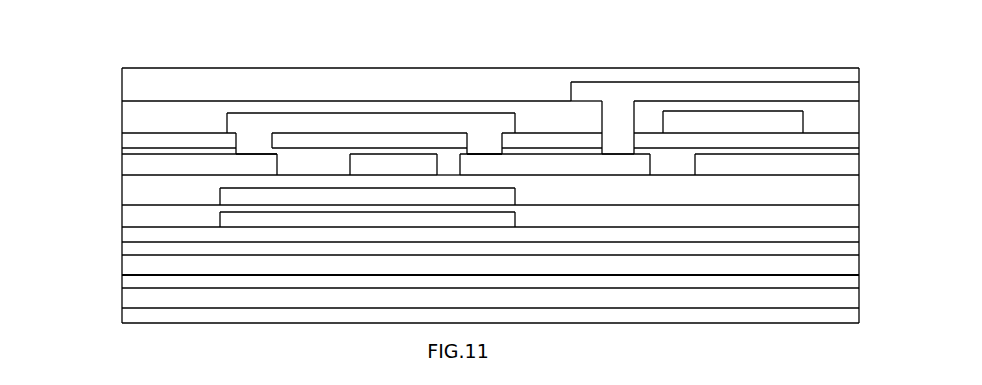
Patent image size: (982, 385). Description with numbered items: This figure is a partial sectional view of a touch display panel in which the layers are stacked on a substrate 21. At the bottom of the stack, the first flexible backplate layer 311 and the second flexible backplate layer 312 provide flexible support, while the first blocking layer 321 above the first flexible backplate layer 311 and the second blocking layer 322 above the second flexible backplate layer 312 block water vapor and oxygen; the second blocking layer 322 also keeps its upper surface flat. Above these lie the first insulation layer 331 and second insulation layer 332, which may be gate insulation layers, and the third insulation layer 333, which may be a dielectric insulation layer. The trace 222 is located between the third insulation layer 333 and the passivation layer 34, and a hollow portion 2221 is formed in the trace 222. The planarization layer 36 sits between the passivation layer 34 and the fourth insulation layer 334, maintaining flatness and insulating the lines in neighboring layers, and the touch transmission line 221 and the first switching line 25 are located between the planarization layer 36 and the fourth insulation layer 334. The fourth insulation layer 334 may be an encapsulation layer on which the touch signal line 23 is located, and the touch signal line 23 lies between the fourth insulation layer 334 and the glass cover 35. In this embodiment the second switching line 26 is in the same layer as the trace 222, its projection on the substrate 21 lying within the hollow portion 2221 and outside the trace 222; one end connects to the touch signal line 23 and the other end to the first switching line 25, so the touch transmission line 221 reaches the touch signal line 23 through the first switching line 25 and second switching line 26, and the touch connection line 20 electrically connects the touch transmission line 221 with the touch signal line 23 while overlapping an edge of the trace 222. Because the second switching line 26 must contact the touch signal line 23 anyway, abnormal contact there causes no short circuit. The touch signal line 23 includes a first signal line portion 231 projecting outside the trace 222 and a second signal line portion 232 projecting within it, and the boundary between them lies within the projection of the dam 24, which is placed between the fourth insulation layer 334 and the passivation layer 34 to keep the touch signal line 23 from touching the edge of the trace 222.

The glass cover 35 is at (147, 87).
The fourth insulation layer 334 is at (147, 117).
The planarization layer 36 is at (147, 142).
The first switching line 25 is at (322, 123).
The touch transmission line 221 is at (173, 167).
The passivation layer 34 is at (288, 167).
The trace 222 is at (397, 163).
The hollow portion 2221 is at (452, 160).
The second switching line 26 is at (531, 167).
The touch connection line 20 is at (496, 98).
The first signal line portion 231 is at (638, 91).
The second signal line portion 232 is at (753, 90).
The touch signal line 23 is at (717, 65).
The dam 24 is at (679, 128).
The third insulation layer 333 is at (845, 194).
The second insulation layer 332 is at (845, 218).
The first insulation layer 331 is at (142, 235).
The second blocking layer 322 is at (845, 247).
The second flexible backplate layer 312 is at (142, 265).
The first blocking layer 321 is at (845, 282).
The first flexible backplate layer 311 is at (142, 298).
The substrate 21 is at (845, 314).